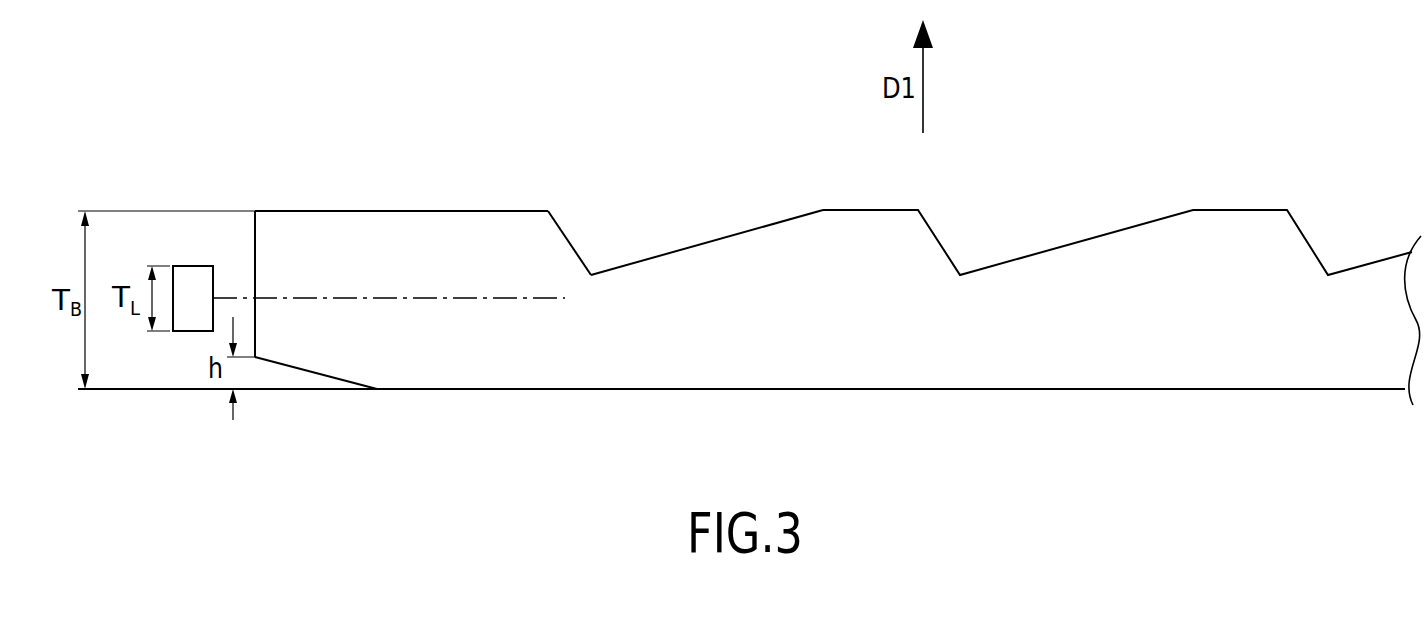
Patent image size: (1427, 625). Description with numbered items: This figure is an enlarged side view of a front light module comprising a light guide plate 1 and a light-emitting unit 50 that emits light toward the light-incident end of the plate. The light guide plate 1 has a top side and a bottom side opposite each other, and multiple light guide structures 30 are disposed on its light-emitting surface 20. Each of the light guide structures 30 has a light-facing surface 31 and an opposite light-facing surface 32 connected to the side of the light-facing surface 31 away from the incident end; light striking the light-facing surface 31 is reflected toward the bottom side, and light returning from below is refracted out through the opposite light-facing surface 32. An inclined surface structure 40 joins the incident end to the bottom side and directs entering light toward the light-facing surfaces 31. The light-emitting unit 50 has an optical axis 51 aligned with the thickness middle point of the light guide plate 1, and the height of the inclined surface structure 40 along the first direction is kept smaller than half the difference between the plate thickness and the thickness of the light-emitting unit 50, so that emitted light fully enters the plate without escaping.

The light guide plate 1 is at (327, 170).
The light-emitting surface 20 is at (423, 210).
The light guide structures 30 is at (671, 176).
The light-facing surface 31 is at (573, 247).
The opposite light-facing surface 32 is at (725, 235).
The inclined surface structure 40 is at (300, 392).
The light-emitting unit 50 is at (197, 276).
The optical axis 51 is at (452, 300).